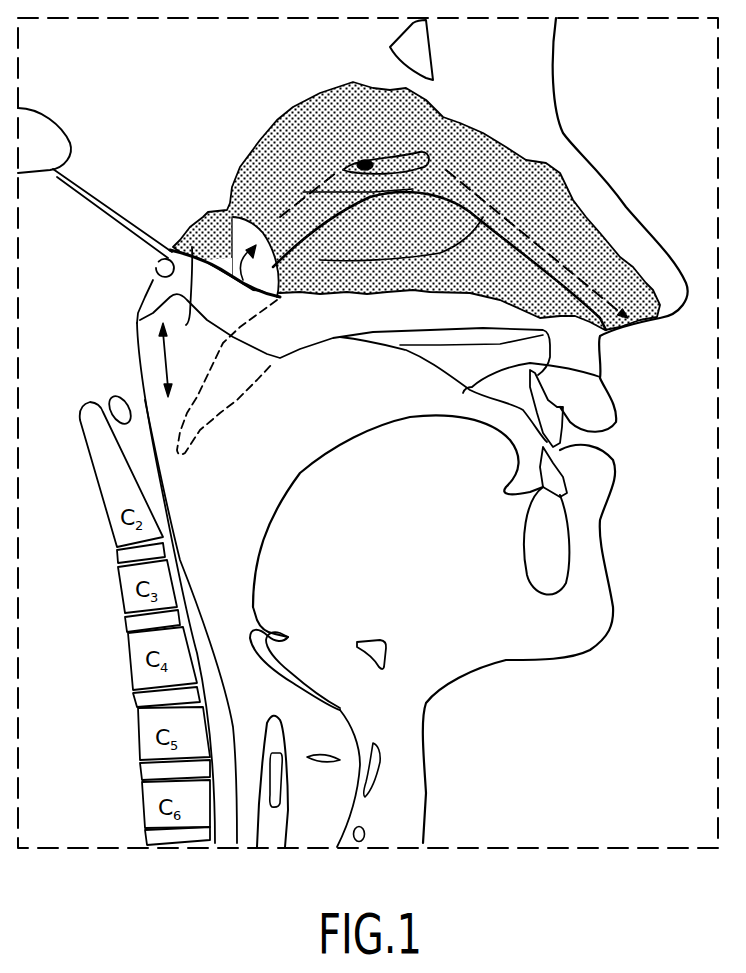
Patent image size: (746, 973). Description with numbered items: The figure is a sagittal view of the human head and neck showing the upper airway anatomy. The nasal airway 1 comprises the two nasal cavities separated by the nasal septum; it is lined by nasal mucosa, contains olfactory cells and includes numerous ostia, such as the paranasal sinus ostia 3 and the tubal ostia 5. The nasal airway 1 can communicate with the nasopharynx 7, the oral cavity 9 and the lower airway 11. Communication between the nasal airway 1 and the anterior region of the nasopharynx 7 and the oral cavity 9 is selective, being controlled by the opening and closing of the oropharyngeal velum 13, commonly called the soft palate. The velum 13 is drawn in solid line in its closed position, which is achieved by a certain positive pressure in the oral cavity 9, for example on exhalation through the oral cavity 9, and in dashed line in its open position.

The nasal airway 1 is at (550, 203).
The paranasal sinus ostia 3 is at (430, 163).
The tubal ostia 5 is at (157, 280).
The nasopharynx 7 is at (192, 247).
The oral cavity 9 is at (600, 377).
The lower airway 11 is at (333, 808).
The oropharyngeal velum 13 is at (143, 300).